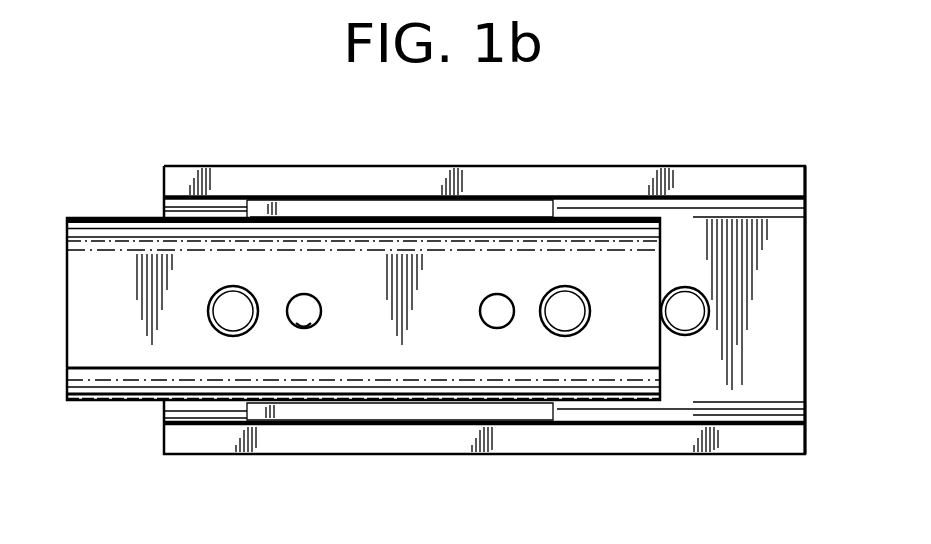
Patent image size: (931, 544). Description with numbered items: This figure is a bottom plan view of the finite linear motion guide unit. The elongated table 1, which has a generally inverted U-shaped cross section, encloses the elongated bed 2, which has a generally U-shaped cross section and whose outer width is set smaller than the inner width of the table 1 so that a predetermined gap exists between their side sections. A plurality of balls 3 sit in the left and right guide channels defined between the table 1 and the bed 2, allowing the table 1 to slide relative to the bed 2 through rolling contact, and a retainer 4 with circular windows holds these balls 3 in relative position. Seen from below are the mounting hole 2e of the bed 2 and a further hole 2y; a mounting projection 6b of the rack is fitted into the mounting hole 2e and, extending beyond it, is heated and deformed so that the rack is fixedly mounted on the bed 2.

The table 1 is at (730, 186).
The bed 2 is at (98, 258).
The mounting hole 2e is at (303, 296).
The hole in slide rail 2y is at (570, 333).
The ball 3 is at (370, 197).
The retainer 4 is at (478, 210).
The mounting projection 6b is at (303, 326).